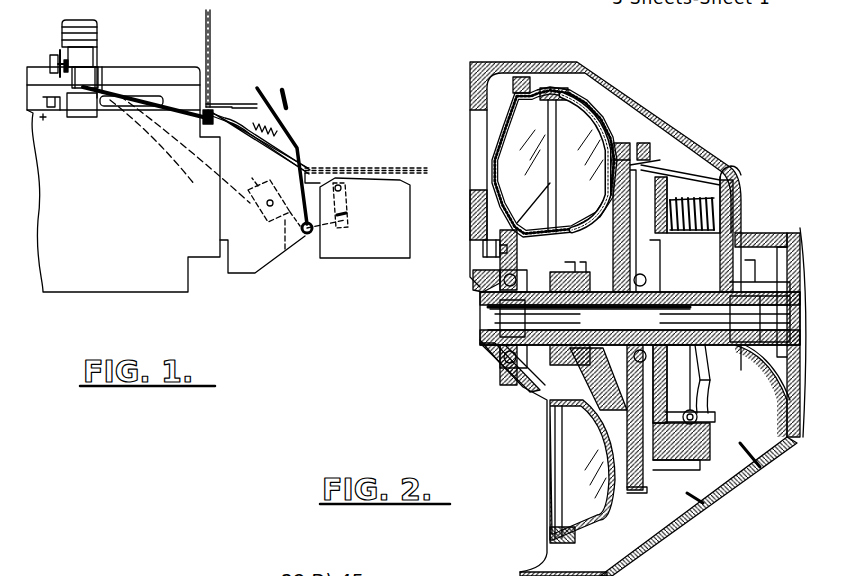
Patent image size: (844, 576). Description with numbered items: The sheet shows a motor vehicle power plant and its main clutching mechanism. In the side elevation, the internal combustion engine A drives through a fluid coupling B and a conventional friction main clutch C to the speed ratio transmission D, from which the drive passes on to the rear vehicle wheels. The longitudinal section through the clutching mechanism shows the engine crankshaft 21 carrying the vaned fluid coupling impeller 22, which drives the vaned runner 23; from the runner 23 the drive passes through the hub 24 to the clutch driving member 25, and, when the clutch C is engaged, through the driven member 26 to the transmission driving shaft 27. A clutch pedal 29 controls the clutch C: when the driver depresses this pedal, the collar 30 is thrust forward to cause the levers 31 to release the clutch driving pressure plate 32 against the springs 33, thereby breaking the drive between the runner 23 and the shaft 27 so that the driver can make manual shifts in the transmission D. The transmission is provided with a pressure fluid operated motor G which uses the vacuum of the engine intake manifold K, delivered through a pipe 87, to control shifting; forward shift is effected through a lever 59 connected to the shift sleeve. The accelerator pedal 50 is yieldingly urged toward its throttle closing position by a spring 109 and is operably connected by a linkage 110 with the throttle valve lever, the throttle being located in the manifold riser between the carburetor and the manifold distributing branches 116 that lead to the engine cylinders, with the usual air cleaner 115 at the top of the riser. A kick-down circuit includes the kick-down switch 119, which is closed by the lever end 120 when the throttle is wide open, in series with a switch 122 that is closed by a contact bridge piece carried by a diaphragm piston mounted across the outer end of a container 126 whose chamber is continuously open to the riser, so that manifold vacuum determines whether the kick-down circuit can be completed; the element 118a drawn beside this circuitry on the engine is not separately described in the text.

In FIG. 1, the internal combustion engine A is at (100, 290).
In FIG. 2, the fluid coupling B is at (590, 90).
In FIG. 2, the friction main clutch C is at (677, 160).
In FIG. 1, the speed ratio transmission D is at (370, 250).
In FIG. 1, the pressure fluid operated motor G is at (296, 233).
In FIG. 1, the engine intake manifold K is at (87, 128).
In FIG. 1, the clutch pedal 29 is at (272, 92).
In FIG. 1, the accelerator pedal 50 is at (272, 125).
In FIG. 1, the lever 59 is at (348, 216).
In FIG. 1, the pipe 87 is at (178, 190).
In FIG. 1, the spring 109 is at (282, 130).
In FIG. 1, the linkage 110 is at (170, 112).
In FIG. 1, the air cleaner 115 is at (98, 34).
In FIG. 1, the manifold distributing branches 116 is at (152, 100).
In FIG. 1, the plunger 118a is at (89, 72).
In FIG. 1, the kick-down switch 119 is at (86, 113).
In FIG. 1, the lever end 120 is at (103, 118).
In FIG. 1, the switch 122 is at (56, 66).
In FIG. 1, the container 126 is at (64, 62).
In FIG. 2, the engine crankshaft 21 is at (480, 277).
In FIG. 2, the fluid coupling impeller 22 is at (505, 124).
In FIG. 2, the runner 23 is at (600, 120).
In FIG. 2, the hub 24 is at (640, 318).
In FIG. 2, the clutch driving member 25 is at (670, 513).
In FIG. 2, the driven member 26 is at (650, 270).
In FIG. 2, the transmission driving shaft 27 is at (762, 340).
In FIG. 2, the collar 30 is at (757, 283).
In FIG. 2, the levers 31 is at (718, 410).
In FIG. 2, the clutch driving pressure plate 32 is at (672, 455).
In FIG. 2, the springs 33 is at (712, 190).